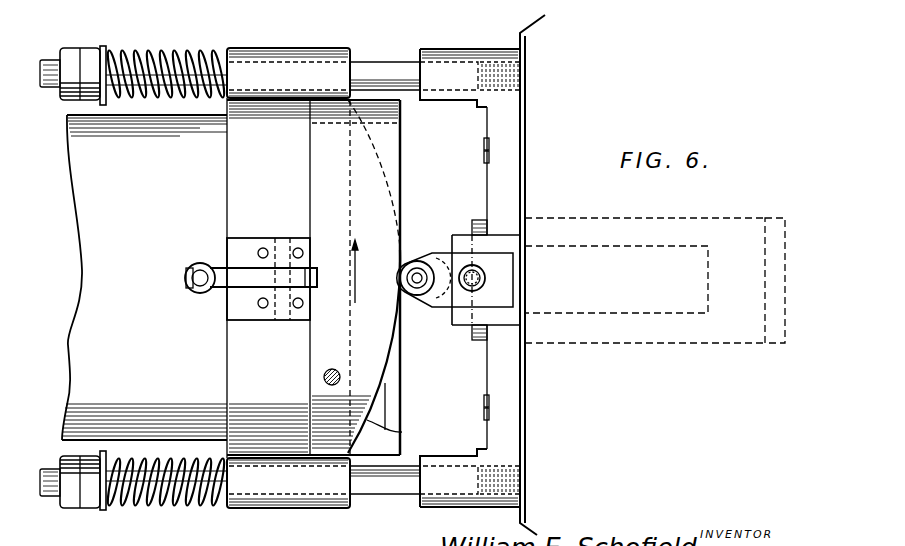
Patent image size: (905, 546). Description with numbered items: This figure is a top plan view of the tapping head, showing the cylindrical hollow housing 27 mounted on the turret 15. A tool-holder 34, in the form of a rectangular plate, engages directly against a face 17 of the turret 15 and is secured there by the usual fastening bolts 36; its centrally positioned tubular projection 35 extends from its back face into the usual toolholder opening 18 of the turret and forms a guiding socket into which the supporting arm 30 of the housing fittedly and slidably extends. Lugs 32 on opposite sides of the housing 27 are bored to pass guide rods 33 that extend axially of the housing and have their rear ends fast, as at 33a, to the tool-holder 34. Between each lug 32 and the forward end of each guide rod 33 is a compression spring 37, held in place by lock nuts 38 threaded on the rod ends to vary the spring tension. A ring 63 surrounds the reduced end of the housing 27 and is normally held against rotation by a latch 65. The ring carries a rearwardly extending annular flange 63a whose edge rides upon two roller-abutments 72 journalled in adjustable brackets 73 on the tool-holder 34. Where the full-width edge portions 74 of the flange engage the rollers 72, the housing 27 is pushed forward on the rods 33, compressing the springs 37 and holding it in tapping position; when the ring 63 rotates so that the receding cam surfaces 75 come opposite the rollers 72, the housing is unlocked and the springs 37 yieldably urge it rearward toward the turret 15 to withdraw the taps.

The turret 15 is at (535, 25).
The face of the turret 17 is at (515, 407).
The toolholder opening 18 is at (776, 220).
The housing 27 is at (144, 277).
The supporting arm 30 is at (673, 308).
The lugs 32 is at (292, 493).
The guide rods 33 is at (385, 485).
The rear ends of guide rods 33a is at (450, 488).
The tool-holder 34 is at (513, 163).
The tubular projection 35 is at (710, 230).
The fastening bolts 36 is at (487, 140).
The compression spring 37 is at (172, 503).
The lock nuts 38 is at (85, 508).
The ring 63 is at (320, 345).
The annular flange 63a is at (373, 198).
The latch 65 is at (197, 265).
The roller-abutments 72 is at (410, 292).
The adjustable brackets 73 is at (505, 270).
The edge portions 74 is at (402, 247).
The cam surfaces 75 is at (372, 153).